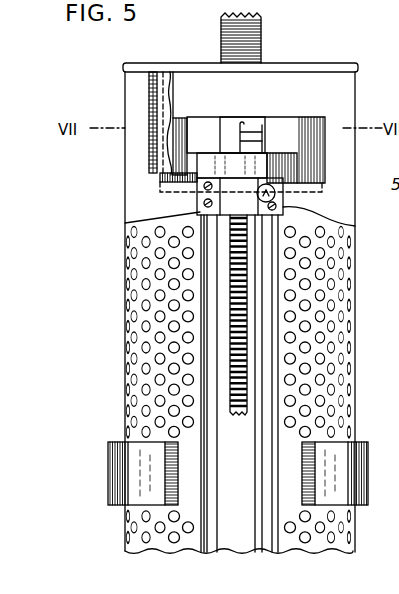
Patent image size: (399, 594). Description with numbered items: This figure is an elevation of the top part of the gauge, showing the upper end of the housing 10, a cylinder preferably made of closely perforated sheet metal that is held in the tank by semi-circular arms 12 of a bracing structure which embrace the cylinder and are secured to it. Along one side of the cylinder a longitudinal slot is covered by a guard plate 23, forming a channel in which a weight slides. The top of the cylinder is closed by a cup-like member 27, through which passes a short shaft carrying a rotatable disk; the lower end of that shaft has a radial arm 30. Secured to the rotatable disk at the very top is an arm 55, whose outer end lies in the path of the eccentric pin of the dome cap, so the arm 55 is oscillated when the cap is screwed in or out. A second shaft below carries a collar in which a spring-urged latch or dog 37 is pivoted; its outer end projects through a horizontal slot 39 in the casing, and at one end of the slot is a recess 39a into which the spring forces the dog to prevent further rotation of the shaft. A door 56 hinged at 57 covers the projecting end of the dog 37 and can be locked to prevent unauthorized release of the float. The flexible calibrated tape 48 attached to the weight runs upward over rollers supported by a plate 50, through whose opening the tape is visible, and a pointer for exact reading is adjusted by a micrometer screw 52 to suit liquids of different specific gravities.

The housing 10 is at (352, 369).
The semi-circular arms 12 is at (138, 448).
The guard plate 23 is at (255, 430).
The cup-like member 27 is at (347, 56).
The radial arm 30 is at (253, 117).
The latch or dog 37 is at (233, 117).
The horizontal slot 39 is at (202, 118).
The recess 39a is at (160, 178).
The flexible calibrated tape 48 is at (230, 338).
The plate 50 is at (223, 203).
The micrometer screw 52 is at (275, 198).
The arm 55 is at (267, 40).
The door 56 is at (168, 72).
The hinge 57 is at (150, 90).